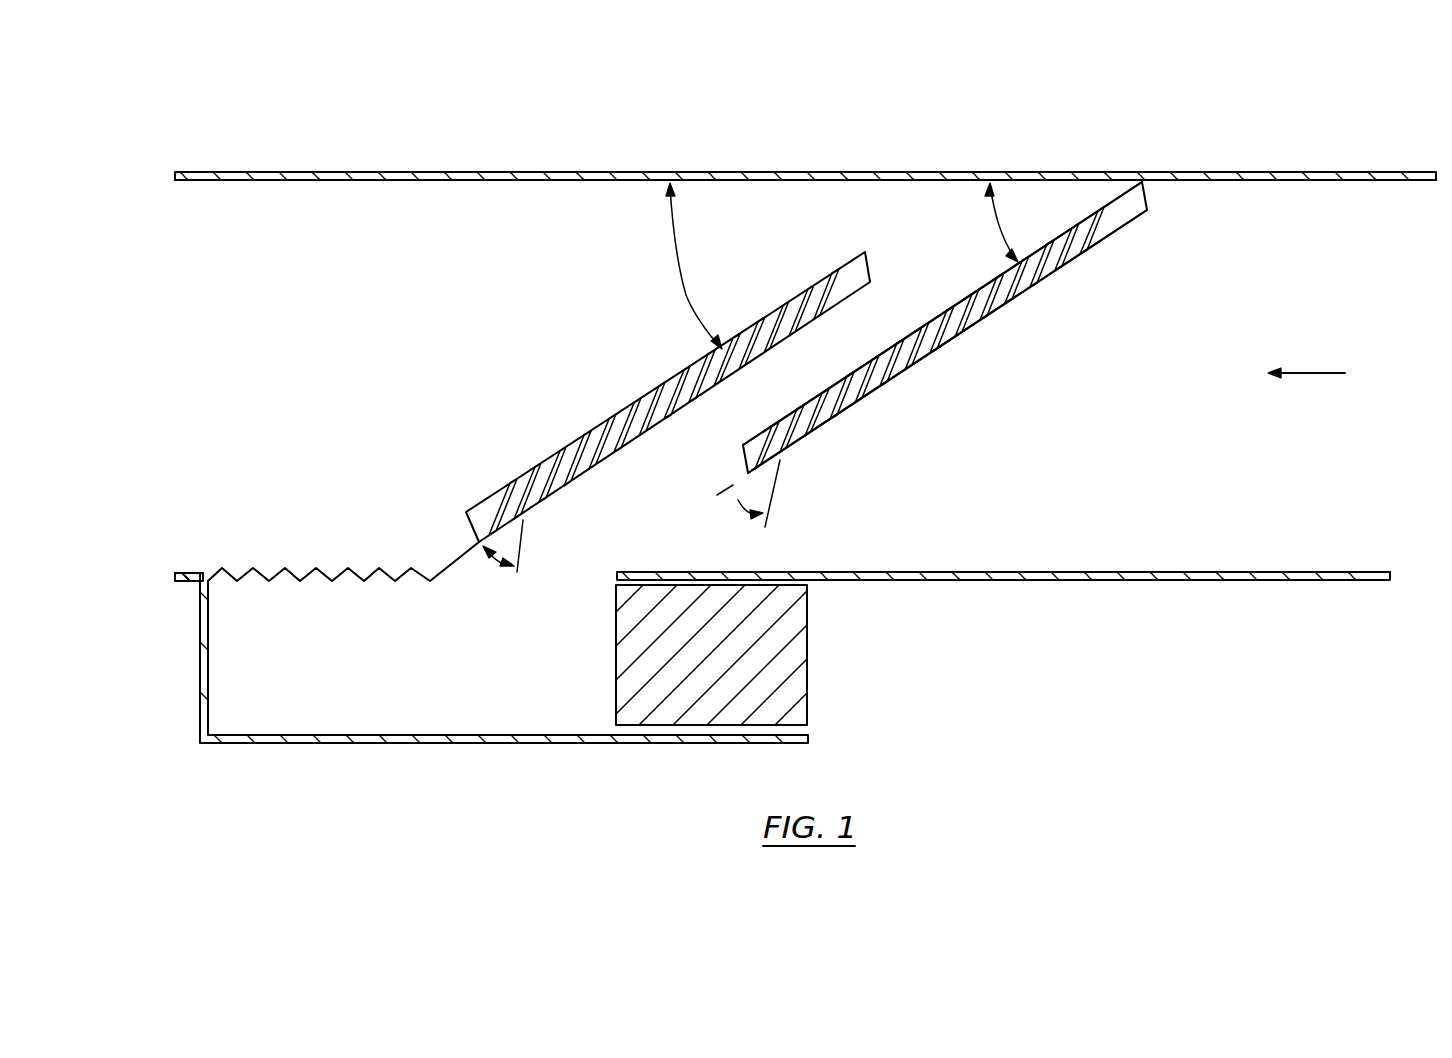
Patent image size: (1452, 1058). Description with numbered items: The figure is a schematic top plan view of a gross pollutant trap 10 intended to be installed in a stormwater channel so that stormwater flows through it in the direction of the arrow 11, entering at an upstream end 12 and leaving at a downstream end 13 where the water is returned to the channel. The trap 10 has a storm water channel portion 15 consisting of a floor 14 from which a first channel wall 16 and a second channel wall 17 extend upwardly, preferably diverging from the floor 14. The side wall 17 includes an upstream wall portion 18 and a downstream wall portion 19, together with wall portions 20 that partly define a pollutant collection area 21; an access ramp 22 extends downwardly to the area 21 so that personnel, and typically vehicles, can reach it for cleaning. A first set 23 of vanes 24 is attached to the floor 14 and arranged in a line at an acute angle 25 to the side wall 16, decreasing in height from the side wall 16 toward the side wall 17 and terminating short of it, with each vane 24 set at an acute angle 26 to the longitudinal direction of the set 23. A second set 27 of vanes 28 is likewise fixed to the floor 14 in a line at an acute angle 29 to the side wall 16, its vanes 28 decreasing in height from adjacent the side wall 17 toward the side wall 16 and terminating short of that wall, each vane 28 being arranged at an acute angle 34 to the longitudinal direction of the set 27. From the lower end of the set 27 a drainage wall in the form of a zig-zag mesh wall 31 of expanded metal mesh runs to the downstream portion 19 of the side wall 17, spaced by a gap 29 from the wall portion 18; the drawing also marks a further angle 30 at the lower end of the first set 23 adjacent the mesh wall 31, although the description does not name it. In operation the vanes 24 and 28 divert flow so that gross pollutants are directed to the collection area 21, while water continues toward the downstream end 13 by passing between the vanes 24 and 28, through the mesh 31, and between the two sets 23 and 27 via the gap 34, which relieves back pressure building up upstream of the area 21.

The gross pollutant trap 10 is at (1293, 159).
The arrow 11 is at (1317, 370).
The upstream end 12 is at (1350, 465).
The downstream end 13 is at (207, 467).
The floor 14 is at (1017, 466).
The storm water channel portion 15 is at (819, 157).
The first channel wall 16 is at (702, 174).
The second channel wall 17 is at (1174, 584).
The upstream wall portion 18 is at (1265, 581).
The downstream wall portion 19 is at (186, 583).
The wall portions 20 is at (203, 704).
The pollutant collection area 21 is at (319, 704).
The access ramp 22 is at (808, 688).
The first set of vanes 23 is at (938, 368).
The vanes 24 is at (1060, 242).
The acute angle 25 is at (993, 228).
The acute angle 26 is at (733, 498).
The second set of vanes 27 is at (528, 401).
The vanes 28 is at (645, 403).
The acute angle 29 is at (677, 262).
The angle 30 is at (486, 552).
The mesh wall 31 is at (327, 562).
The acute angle 34 is at (799, 364).